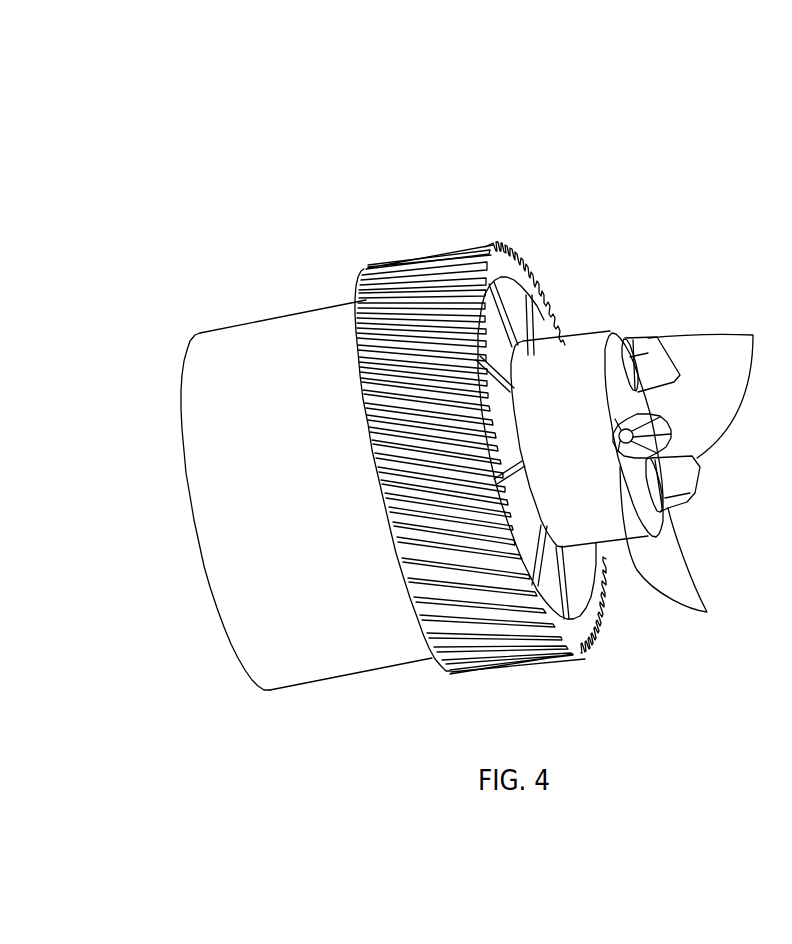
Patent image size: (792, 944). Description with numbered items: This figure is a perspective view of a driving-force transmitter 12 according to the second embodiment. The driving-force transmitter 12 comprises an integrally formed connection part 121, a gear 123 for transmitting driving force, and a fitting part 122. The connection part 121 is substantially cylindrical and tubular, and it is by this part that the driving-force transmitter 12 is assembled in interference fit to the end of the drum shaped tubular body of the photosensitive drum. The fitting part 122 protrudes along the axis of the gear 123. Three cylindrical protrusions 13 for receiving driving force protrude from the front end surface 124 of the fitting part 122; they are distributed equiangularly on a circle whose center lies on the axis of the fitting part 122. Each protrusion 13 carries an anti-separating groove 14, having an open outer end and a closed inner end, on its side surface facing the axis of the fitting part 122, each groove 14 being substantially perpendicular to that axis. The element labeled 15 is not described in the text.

The driving-force transmitter 12 is at (265, 222).
The connection part 121 is at (219, 420).
The fitting part 122 is at (557, 380).
The gear 123 is at (428, 293).
The front end surface 124 is at (613, 380).
The cylindrical protrusion 13 is at (647, 435).
The anti-separating groove 14 is at (705, 612).
The protrusion 15 is at (680, 475).